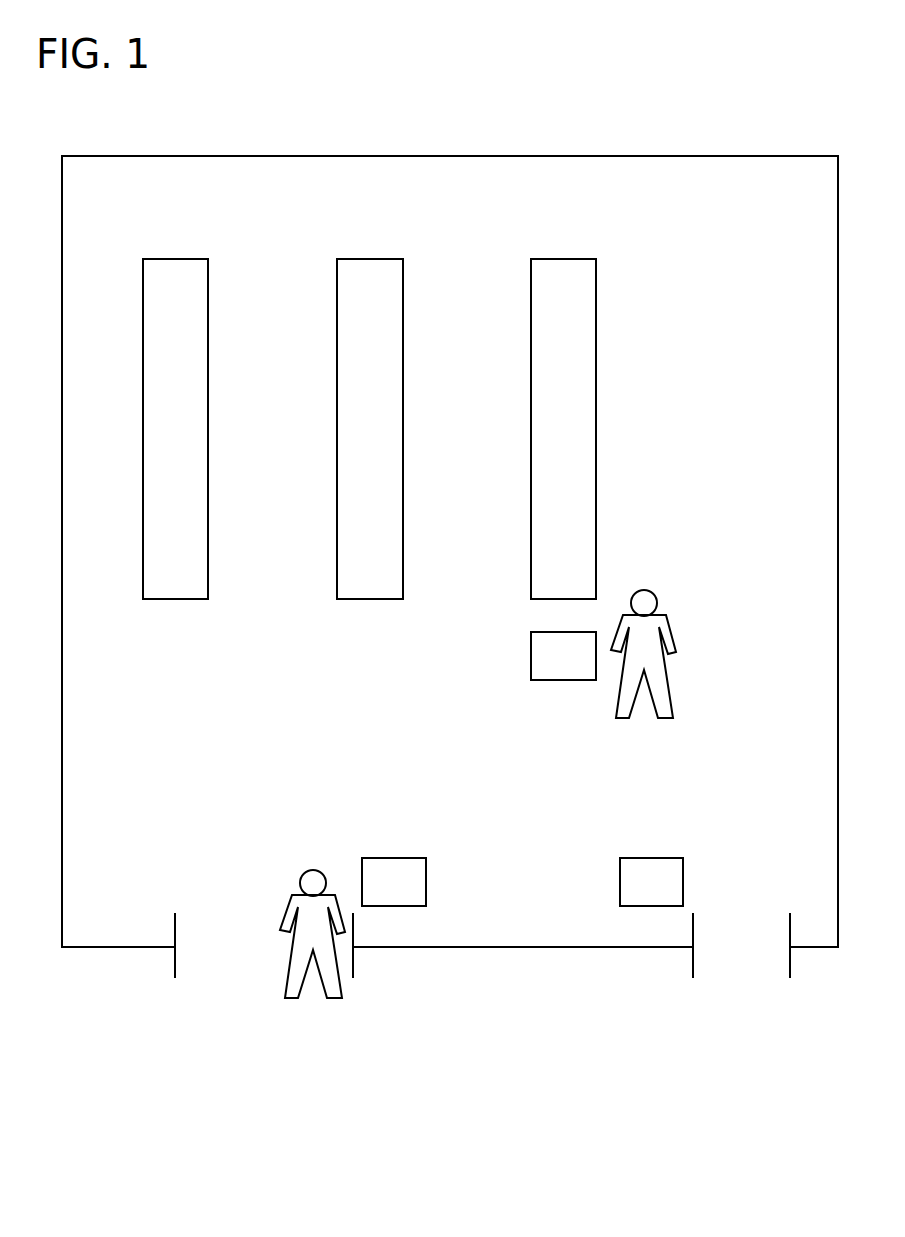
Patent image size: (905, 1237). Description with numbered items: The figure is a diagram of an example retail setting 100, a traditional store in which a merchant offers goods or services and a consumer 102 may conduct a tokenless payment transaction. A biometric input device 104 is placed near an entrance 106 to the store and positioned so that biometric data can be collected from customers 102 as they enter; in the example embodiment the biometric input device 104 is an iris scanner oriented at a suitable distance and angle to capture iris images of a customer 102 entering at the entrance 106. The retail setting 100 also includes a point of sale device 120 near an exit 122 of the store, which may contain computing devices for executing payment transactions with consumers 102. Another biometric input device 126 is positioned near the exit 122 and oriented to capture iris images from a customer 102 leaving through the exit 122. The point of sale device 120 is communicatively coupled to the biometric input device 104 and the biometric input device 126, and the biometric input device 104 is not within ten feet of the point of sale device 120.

The retail setting 100 is at (717, 143).
The consumer 102 is at (292, 905).
The biometric input device 104 is at (410, 858).
The entrance 106 is at (215, 980).
The point of sale (POS) device 120 is at (542, 632).
The exit 122 is at (733, 980).
The biometric input device 126 is at (637, 858).